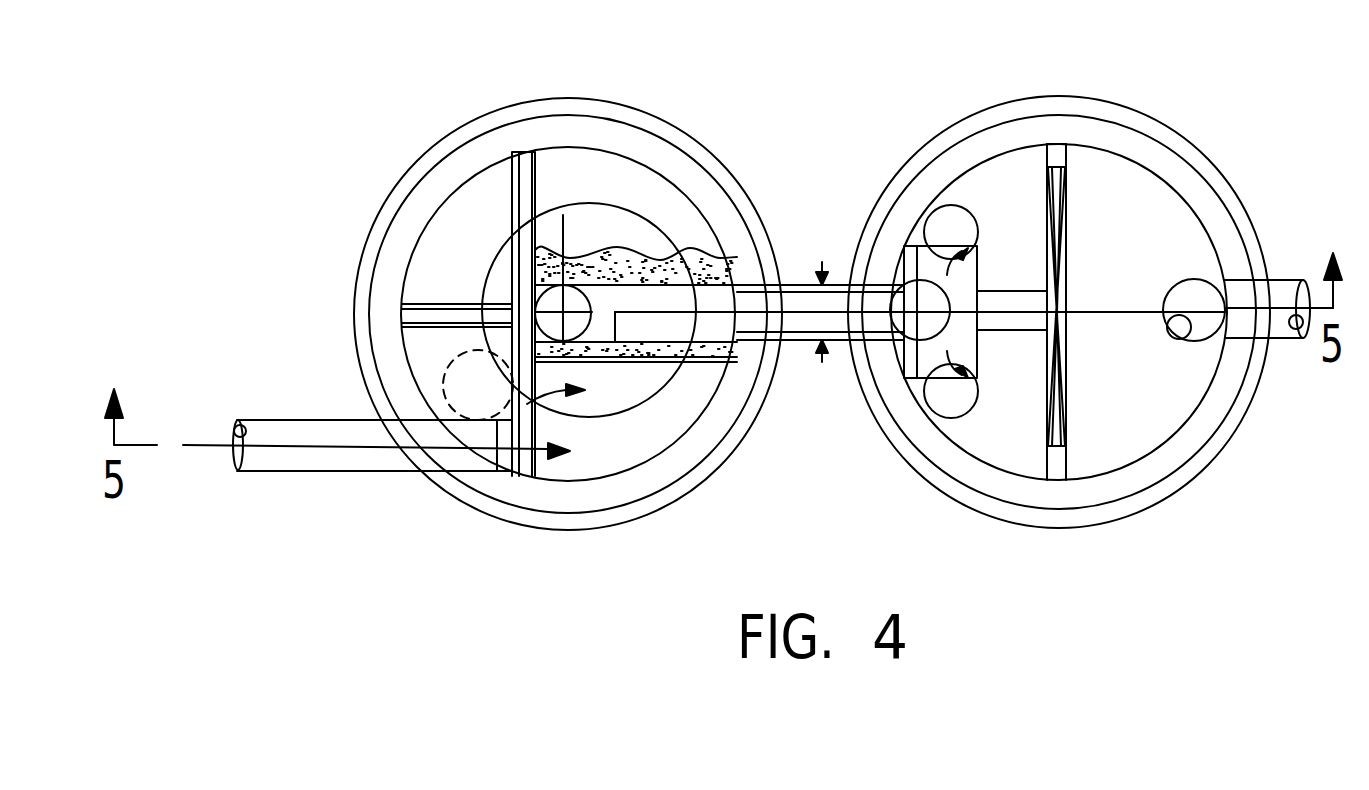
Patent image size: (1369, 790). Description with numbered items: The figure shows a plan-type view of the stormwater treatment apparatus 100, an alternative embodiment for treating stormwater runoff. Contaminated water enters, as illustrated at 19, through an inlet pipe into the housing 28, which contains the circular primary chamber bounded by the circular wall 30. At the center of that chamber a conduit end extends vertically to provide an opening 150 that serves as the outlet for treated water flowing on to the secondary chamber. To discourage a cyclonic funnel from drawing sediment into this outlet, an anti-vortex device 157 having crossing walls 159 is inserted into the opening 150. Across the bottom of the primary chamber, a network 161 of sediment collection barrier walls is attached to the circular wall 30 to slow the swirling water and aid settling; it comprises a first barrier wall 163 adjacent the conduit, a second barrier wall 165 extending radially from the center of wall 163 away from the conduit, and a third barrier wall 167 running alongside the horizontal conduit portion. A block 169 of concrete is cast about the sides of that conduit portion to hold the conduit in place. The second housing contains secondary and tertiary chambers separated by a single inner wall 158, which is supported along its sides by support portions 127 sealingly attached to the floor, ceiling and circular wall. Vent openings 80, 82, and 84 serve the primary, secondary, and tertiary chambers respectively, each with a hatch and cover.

The contaminated water inlet flow 19 is at (557, 458).
The housing 28 is at (604, 107).
The circular wall 30 is at (723, 468).
The vent opening 80 is at (464, 380).
The vent opening 82 is at (947, 294).
The vent opening 84 is at (1186, 344).
The stormwater treatment apparatus 100 is at (1256, 151).
The support portions 127 is at (1068, 150).
The opening (primary chamber outlet) 150 is at (563, 212).
The anti-vortex device 157 is at (557, 285).
The inner wall 158 is at (1058, 203).
The walls of anti-vortex device 159 is at (588, 305).
The network of sediment collection barrier walls 161 is at (419, 333).
The first barrier wall 163 is at (535, 165).
The second barrier wall 165 is at (427, 316).
The third barrier wall 167 is at (700, 378).
The concrete block 169 is at (723, 256).